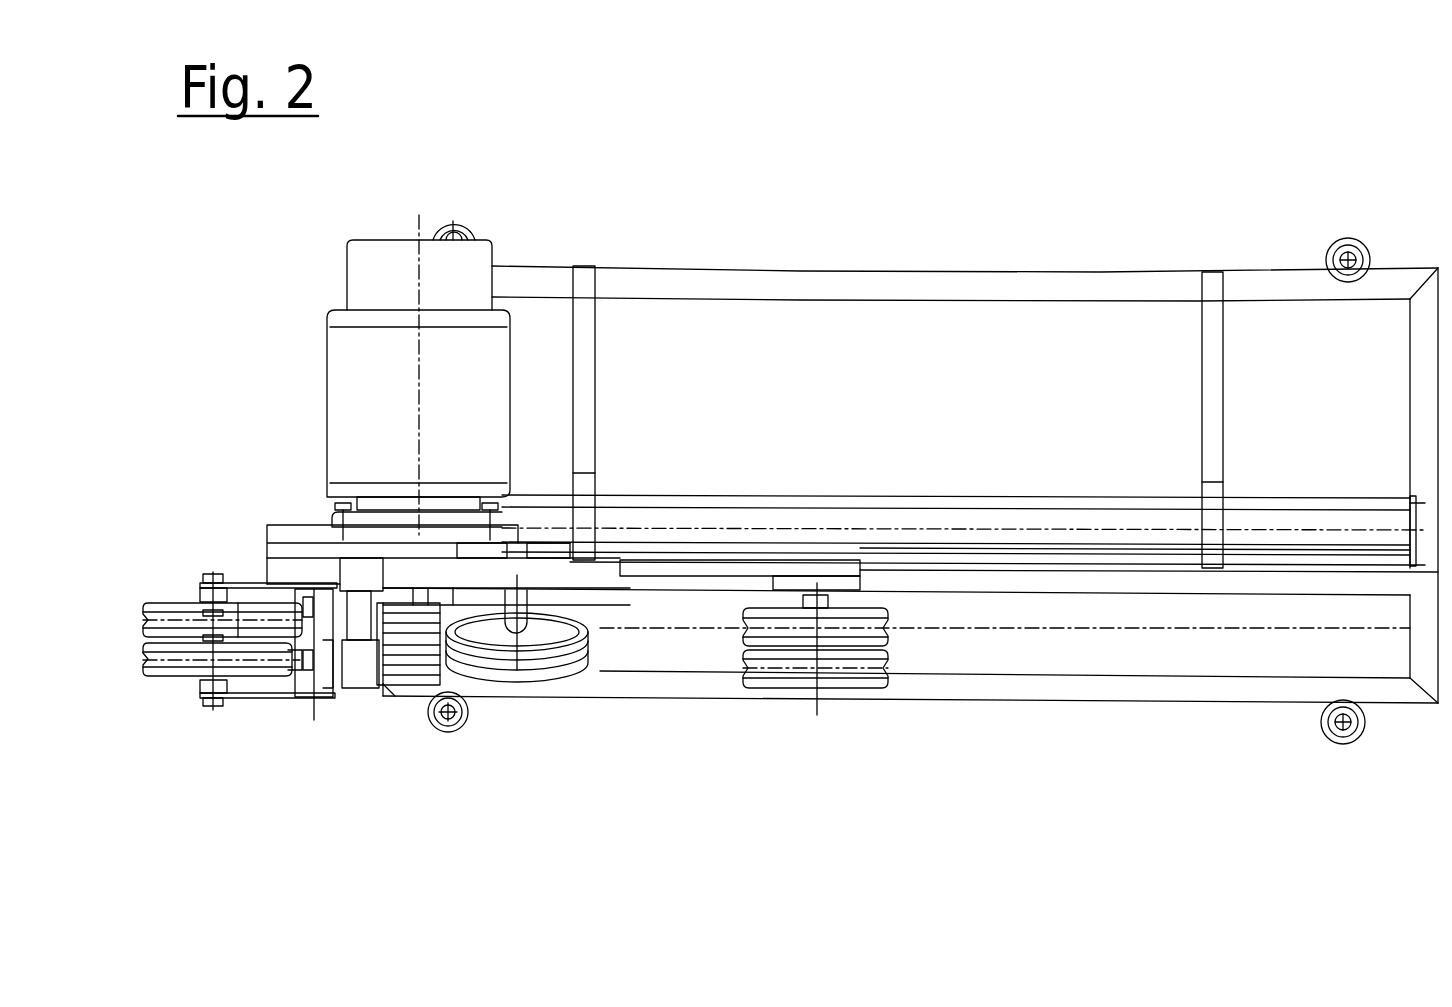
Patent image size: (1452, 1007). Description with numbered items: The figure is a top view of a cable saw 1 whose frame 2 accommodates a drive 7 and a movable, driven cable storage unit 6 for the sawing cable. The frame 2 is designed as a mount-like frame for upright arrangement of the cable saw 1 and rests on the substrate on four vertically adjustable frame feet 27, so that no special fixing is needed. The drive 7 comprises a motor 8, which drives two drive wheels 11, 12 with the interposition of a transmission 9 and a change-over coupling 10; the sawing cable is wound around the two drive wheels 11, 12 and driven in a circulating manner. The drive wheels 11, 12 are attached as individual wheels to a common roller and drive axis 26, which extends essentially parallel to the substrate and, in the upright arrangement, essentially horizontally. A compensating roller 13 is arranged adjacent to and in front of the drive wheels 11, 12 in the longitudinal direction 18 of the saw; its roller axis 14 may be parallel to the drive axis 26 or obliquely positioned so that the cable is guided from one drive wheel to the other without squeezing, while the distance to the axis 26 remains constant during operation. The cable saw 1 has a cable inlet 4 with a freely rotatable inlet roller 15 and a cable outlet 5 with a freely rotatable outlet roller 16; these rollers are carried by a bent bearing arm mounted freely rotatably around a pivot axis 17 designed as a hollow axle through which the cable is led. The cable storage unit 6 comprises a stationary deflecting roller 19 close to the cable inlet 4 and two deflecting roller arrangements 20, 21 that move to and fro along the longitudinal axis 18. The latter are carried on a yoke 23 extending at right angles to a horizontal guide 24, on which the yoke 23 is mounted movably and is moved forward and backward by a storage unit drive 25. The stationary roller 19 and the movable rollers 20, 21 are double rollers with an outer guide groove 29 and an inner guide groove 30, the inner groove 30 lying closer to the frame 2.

The cable saw 1 is at (825, 235).
The frame 2 is at (1098, 290).
The cable inlet 4 is at (215, 548).
The inlet roller 15 is at (193, 618).
The cable outlet 5 is at (222, 735).
The outlet roller 16 is at (178, 663).
The cable storage unit 6 is at (948, 465).
The drive 7 is at (517, 230).
The motor 8 is at (372, 360).
The transmission 9 is at (303, 548).
The change-over coupling 10 is at (497, 512).
The drive wheel 11 is at (268, 585).
The drive wheel 12 is at (272, 612).
The compensating roller 13 is at (555, 665).
The roller axis 14 is at (525, 600).
The pivot axis 17 is at (339, 692).
The longitudinal direction 18 is at (360, 663).
The stationary deflecting roller 19 is at (455, 682).
The outer guide groove 29 is at (883, 677).
The deflecting roller arrangement 20 is at (1005, 717).
The deflecting roller arrangement 21 is at (828, 658).
The yoke 23 is at (767, 560).
The horizontal guide 24 is at (1128, 583).
The storage unit drive 25 is at (1305, 540).
The roller and drive axis 26 is at (817, 713).
The frame foot 27 is at (1323, 728).
The inner guide groove 30 is at (887, 633).